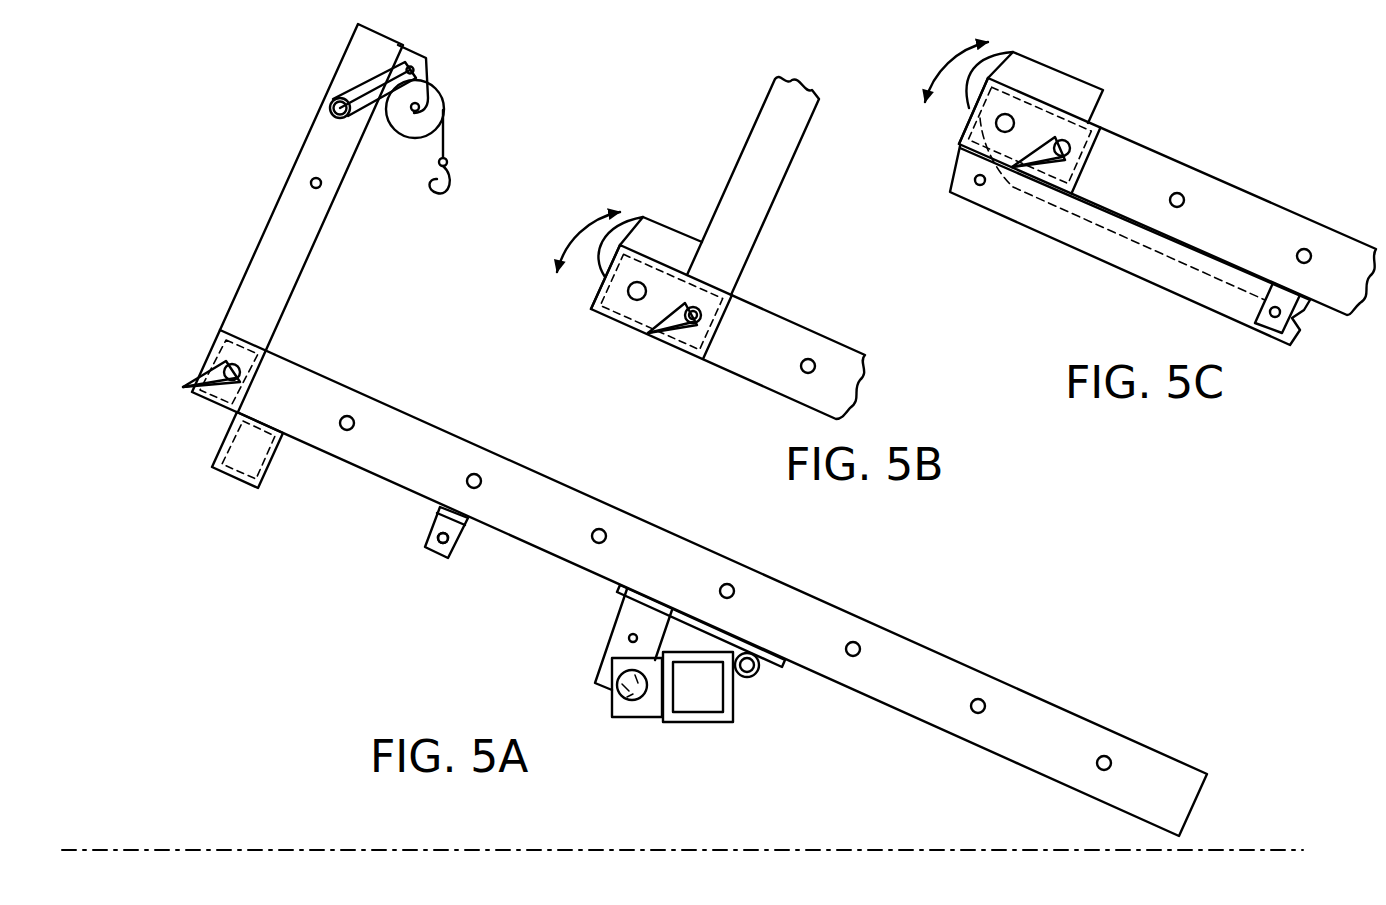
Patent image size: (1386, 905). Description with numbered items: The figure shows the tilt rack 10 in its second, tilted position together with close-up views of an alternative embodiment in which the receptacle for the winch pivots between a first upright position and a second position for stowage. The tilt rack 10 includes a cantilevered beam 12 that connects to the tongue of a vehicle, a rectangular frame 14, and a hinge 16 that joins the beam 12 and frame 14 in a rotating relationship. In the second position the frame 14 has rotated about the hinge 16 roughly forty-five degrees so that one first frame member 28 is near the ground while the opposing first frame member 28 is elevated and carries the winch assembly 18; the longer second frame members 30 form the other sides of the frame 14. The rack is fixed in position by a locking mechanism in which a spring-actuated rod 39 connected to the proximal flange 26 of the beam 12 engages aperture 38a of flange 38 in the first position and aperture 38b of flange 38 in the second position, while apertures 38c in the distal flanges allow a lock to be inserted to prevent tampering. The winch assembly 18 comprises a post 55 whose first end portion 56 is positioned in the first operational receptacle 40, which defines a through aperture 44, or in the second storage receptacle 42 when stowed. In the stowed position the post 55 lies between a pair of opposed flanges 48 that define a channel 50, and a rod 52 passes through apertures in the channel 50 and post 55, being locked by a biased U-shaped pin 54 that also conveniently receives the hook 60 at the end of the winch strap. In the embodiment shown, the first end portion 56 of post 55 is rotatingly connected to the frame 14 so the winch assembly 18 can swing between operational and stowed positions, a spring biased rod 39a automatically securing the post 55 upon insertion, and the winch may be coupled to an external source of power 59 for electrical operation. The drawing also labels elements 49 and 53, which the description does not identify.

In FIG. 5A, the tilt rack 10 is at (235, 165).
In FIG. 5A, the beam 12 is at (700, 720).
In FIG. 5A, the frame 14 is at (952, 738).
In FIG. 5A, the hinge 16 is at (757, 677).
In FIG. 5A, the winch assembly 18 is at (350, 47).
In FIG. 5B, the winch assembly 18 is at (745, 128).
In FIG. 5C, the winch assembly 18 is at (1105, 266).
In FIG. 5A, the second proximal flange 26 is at (635, 720).
In FIG. 5A, the first frame members 28 is at (263, 377).
In FIG. 5A, the second frame members 30 is at (640, 517).
In FIG. 5B, the second frame members 30 is at (852, 346).
In FIG. 5C, the second frame members 30 is at (1292, 215).
In FIG. 5A, the flange 38 is at (622, 617).
In FIG. 5A, the aperture 38a is at (633, 634).
In FIG. 5A, the aperture 38b is at (603, 672).
In FIG. 5A, the apertures 38c is at (600, 653).
In FIG. 5A, the spring-actuated rod 39 is at (622, 698).
In FIG. 5C, the spring biased rod 39a is at (1280, 318).
In FIG. 5A, the first operational receptacle 40 is at (200, 363).
In FIG. 5B, the first operational receptacle 40 is at (600, 288).
In FIG. 5C, the first operational receptacle 40 is at (967, 120).
In FIG. 5A, the second storage receptacle 42 is at (238, 482).
In FIG. 5A, the aperture 44 is at (248, 332).
In FIG. 5A, the flanges 48 is at (437, 553).
In FIG. 5C, the flanges 48 is at (1267, 333).
In FIG. 5C, the mast end 49 is at (1288, 337).
In FIG. 5A, the channel 50 is at (423, 522).
In FIG. 5A, the rod 52 is at (223, 362).
In FIG. 5B, the rod 52 is at (700, 307).
In FIG. 5C, the rod 52 is at (1062, 142).
In FIG. 5B, the pivot pin 53 is at (630, 297).
In FIG. 5C, the pivot pin 53 is at (1010, 120).
In FIG. 5A, the pin 54 is at (183, 383).
In FIG. 5B, the pin 54 is at (663, 335).
In FIG. 5C, the pin 54 is at (1077, 177).
In FIG. 5A, the post 55 is at (258, 266).
In FIG. 5B, the post 55 is at (786, 181).
In FIG. 5C, the post 55 is at (1180, 288).
In FIG. 5A, the first end portion 56 is at (235, 303).
In FIG. 5B, the first end portion 56 is at (738, 160).
In FIG. 5C, the first end portion 56 is at (992, 212).
In FIG. 5B, the external source of power 59 is at (667, 225).
In FIG. 5C, the external source of power 59 is at (1104, 102).
In FIG. 5A, the hook 60 is at (450, 198).